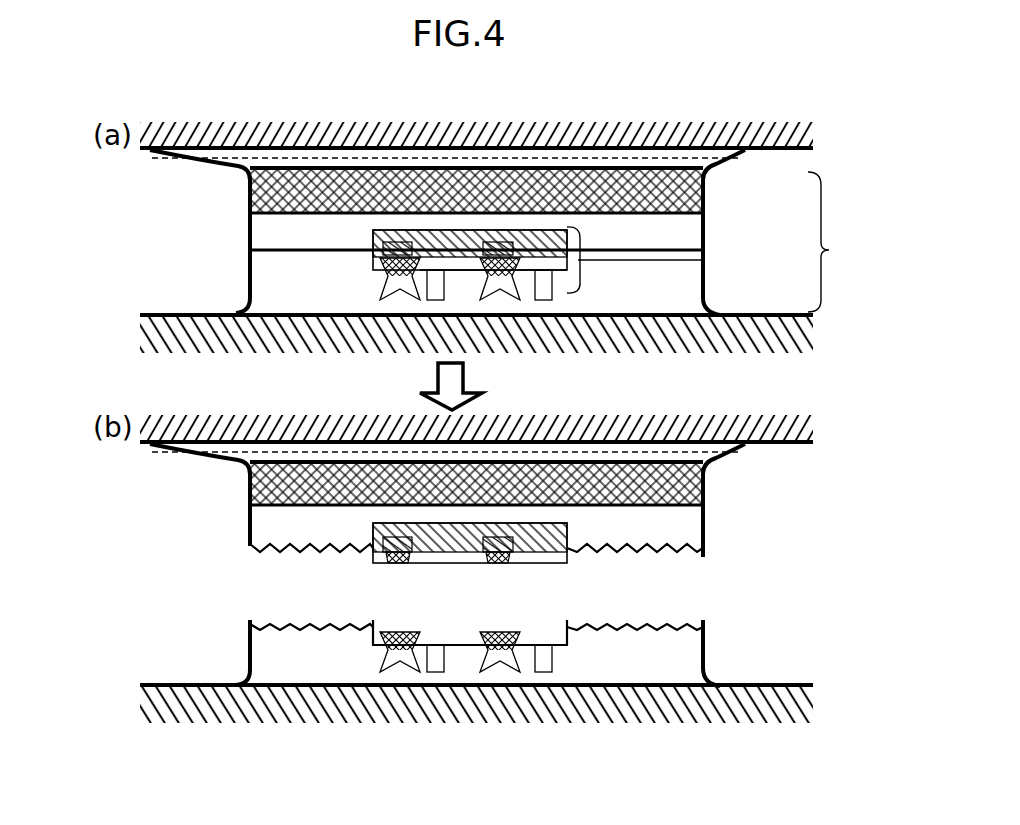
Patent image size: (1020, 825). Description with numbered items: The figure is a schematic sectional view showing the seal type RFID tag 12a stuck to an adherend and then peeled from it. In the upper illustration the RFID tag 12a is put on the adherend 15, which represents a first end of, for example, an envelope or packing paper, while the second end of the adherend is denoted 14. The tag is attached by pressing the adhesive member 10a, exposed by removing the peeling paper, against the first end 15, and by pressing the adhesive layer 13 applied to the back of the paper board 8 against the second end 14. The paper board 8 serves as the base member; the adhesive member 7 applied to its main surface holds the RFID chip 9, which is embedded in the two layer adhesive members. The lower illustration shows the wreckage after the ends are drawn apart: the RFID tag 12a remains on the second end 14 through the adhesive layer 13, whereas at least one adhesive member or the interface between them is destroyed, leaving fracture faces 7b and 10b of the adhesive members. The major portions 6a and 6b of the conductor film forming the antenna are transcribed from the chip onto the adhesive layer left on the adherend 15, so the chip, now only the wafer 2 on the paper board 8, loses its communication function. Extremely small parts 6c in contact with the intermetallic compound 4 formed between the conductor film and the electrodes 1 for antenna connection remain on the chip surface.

The electrodes for antenna connection 1 is at (396, 230).
The wafer 2 is at (362, 542).
The intermetallic compound 4 is at (410, 242).
The major portion of antenna conductor film 6a is at (545, 642).
The major portion of antenna conductor film 6b is at (486, 637).
The extremely small parts of antenna conductor film 6c is at (504, 564).
The adhesive member 7 is at (688, 236).
The fracture face of adhesive member 7b is at (660, 553).
The paper board 8 is at (700, 201).
The RFID chip 9 is at (700, 257).
The adhesive member 10a is at (690, 303).
The fracture face of adhesive member 10b is at (640, 626).
The RFID tag 12a is at (843, 242).
The adhesive layer 13 is at (240, 166).
The second end of adherend 14 is at (549, 123).
The adherend 15 is at (672, 354).